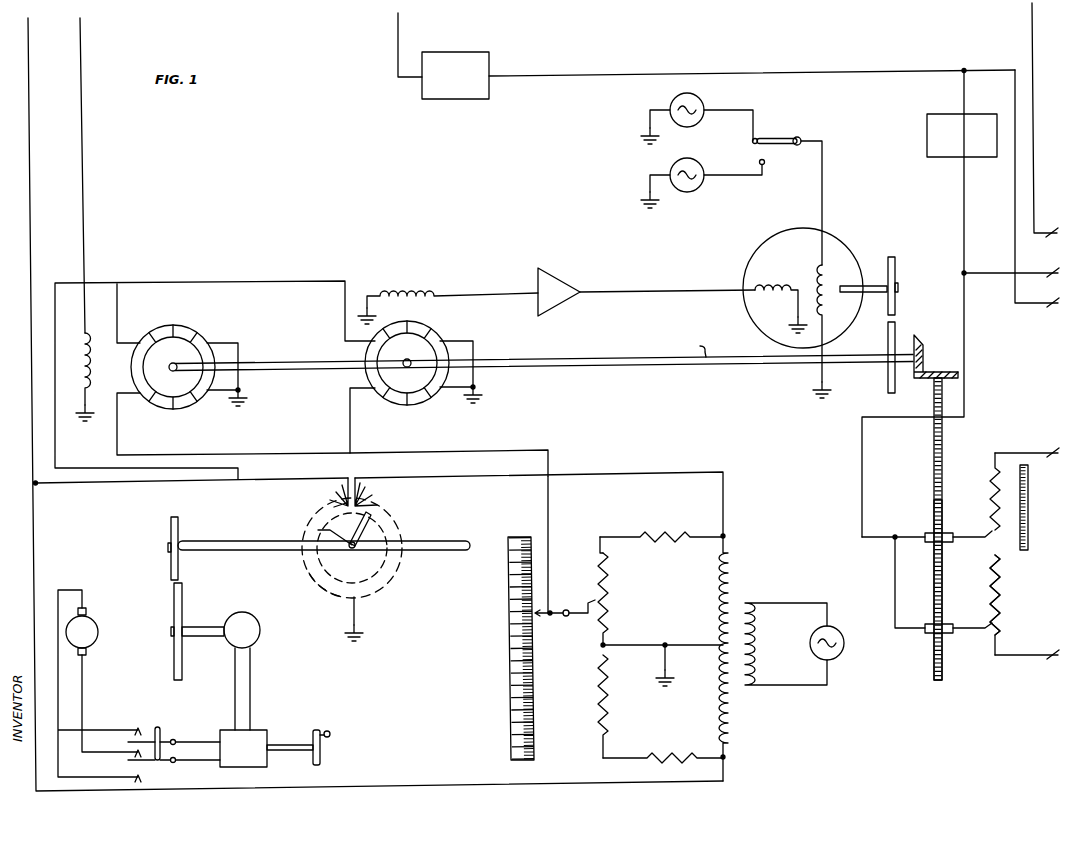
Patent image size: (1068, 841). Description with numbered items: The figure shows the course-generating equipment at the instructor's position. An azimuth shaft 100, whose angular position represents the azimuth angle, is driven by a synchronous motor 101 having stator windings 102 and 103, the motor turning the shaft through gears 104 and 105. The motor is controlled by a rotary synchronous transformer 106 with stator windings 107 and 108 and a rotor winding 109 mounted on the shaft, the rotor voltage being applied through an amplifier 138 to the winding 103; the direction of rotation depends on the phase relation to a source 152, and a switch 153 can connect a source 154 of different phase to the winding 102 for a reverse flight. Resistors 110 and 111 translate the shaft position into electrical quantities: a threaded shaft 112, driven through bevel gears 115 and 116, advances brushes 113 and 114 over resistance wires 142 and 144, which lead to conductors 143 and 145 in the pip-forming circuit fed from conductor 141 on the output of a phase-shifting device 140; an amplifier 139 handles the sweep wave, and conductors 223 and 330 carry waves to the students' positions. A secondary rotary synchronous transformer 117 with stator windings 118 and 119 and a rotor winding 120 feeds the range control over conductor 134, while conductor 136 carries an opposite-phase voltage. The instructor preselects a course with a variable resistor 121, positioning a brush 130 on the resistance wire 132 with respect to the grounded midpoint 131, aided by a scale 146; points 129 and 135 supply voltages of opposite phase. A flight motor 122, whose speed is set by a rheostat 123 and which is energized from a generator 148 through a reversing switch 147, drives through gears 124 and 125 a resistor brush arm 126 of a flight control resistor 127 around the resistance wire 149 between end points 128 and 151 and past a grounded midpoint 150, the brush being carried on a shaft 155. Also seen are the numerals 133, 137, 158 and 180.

The azimuth shaft 100 is at (632, 365).
The synchronous motor 101 is at (838, 243).
The stator winding 102 is at (816, 264).
The stator winding 103 is at (766, 297).
The gear 104 is at (893, 273).
The gear 105 is at (895, 331).
The rotary synchronous transformer 106 is at (449, 432).
The stator winding 107 is at (404, 405).
The stator winding 108 is at (432, 333).
The rotor winding 109 is at (399, 290).
The resistor 110 is at (1038, 511).
The resistor 111 is at (1017, 595).
The threaded shaft 112 is at (934, 505).
The brush 113 is at (949, 541).
The brush 114 is at (970, 636).
The bevel gear 115 is at (924, 350).
The bevel gear 116 is at (936, 375).
The secondary rotary synchronous transformer 117 is at (215, 380).
The stator winding 118 is at (174, 409).
The stator winding 119 is at (205, 327).
The rotor winding 120 is at (91, 379).
The variable resistor 121 is at (599, 626).
The flight motor 122 is at (256, 640).
The rheostat 123 is at (268, 735).
The gear 124 is at (175, 605).
The gear 125 is at (170, 571).
The resistor brush arm 126 is at (344, 543).
The flight control resistor 127 is at (371, 548).
The end point 128 is at (367, 506).
The point 129 is at (727, 535).
The resistor brush 130 is at (567, 617).
The grounded midpoint 131 is at (608, 645).
The resistance wire 132 is at (600, 538).
The junction 133 is at (603, 758).
The conductor 134 is at (84, 114).
The potentiometer point 135 is at (727, 758).
The conductor 136 is at (40, 536).
The resistor 137 is at (608, 592).
The amplifier 138 is at (555, 276).
The amplifier 139 is at (487, 58).
The phase-shifting device 140 is at (940, 113).
The conductor 141 is at (966, 201).
The resistance wire 142 is at (990, 506).
The conductor 143 is at (1008, 456).
The resistance wire 144 is at (990, 610).
The conductor 145 is at (1048, 659).
The scale 146 is at (536, 697).
The reversing switch 147 is at (160, 739).
The generator 148 is at (98, 632).
The resistance wire 149 is at (310, 586).
The grounded midpoint 150 is at (357, 616).
The end point 151 is at (330, 505).
The source 152 is at (703, 104).
The switch 153 is at (762, 140).
The source 154 is at (703, 185).
The shaft 155 is at (214, 546).
The lead 158 is at (990, 267).
The scale marking 180 is at (1039, 471).
The conductor 223 is at (1030, 31).
The conductor 330 is at (1040, 306).